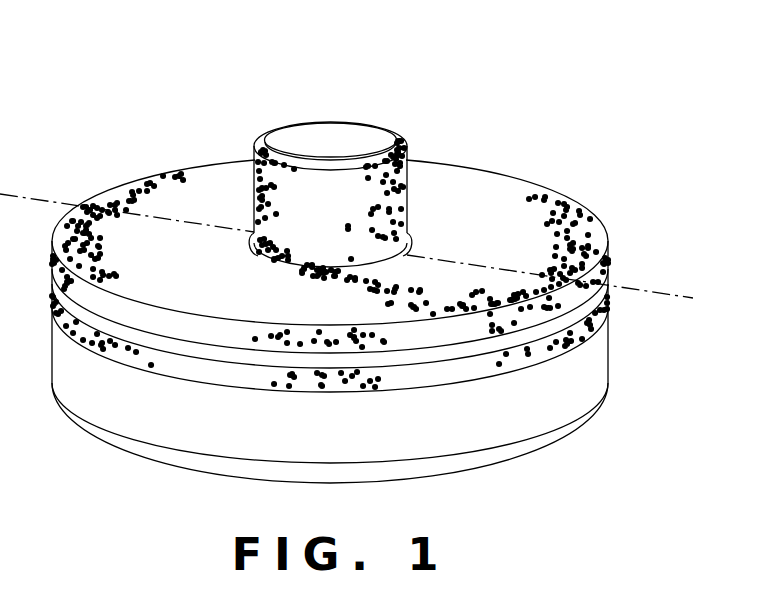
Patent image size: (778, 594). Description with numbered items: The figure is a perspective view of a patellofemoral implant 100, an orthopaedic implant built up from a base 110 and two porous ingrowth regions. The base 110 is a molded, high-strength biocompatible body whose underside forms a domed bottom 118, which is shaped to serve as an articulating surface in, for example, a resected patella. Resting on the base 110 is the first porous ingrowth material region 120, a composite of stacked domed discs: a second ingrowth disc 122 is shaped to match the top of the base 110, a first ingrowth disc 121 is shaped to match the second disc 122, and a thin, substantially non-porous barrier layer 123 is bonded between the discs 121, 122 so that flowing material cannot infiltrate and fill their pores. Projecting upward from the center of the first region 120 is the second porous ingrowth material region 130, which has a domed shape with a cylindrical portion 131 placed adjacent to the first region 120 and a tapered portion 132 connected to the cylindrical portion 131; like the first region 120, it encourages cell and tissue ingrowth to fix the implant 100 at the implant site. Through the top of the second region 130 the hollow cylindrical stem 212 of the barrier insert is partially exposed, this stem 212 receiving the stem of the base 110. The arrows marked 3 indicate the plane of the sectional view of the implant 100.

The patellofemoral implant 100 is at (364, 271).
The base 110 is at (386, 381).
The domed bottom 118 is at (457, 472).
The first porous ingrowth material region 120 is at (374, 255).
The first ingrowth disc 121 is at (612, 264).
The second ingrowth disc 122 is at (608, 333).
The barrier layer 123 is at (608, 297).
The second porous ingrowth material region 130 is at (337, 163).
The cylindrical portion 131 is at (255, 193).
The tapered portion 132 is at (261, 146).
The stem 212 is at (331, 137).
The section line 3- 3 is at (697, 265).